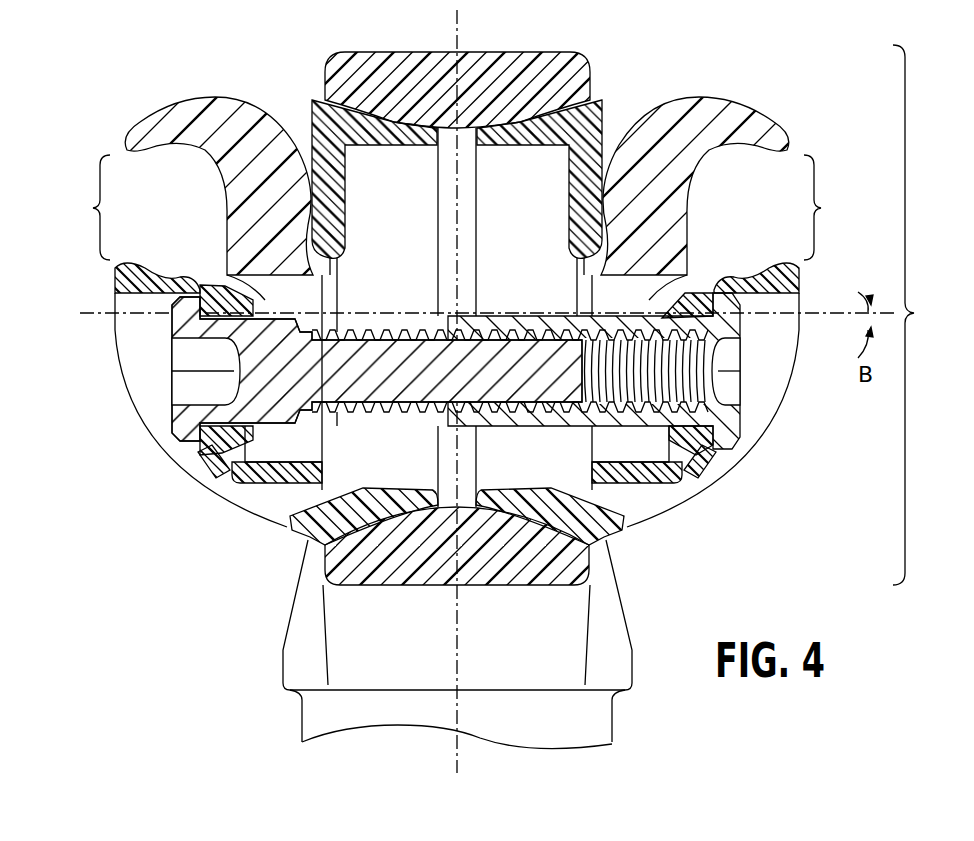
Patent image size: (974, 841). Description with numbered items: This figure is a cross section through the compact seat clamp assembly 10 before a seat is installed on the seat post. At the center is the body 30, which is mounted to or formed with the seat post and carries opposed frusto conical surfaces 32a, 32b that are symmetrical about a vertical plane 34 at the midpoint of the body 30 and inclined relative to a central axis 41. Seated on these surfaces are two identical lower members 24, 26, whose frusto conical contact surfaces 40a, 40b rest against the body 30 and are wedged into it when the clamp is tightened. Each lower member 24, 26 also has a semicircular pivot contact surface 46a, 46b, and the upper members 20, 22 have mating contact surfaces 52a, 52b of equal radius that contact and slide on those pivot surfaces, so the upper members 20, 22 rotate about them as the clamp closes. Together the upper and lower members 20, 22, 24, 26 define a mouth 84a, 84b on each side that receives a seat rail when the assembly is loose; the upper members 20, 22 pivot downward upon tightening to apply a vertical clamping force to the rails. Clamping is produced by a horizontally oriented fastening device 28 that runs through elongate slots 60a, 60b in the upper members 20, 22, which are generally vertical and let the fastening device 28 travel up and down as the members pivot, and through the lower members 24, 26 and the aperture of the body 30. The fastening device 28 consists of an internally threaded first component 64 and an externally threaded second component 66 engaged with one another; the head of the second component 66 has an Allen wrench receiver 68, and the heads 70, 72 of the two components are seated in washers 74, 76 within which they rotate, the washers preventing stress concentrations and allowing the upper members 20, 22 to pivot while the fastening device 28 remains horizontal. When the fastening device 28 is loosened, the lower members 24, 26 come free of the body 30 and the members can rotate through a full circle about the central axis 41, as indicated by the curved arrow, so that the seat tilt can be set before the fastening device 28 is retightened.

The seat clamp assembly 10 is at (919, 315).
The upper member 20 is at (726, 95).
The upper member 22 is at (190, 95).
The lower member 24 is at (747, 258).
The lower member 26 is at (167, 258).
The fastening device 28 is at (760, 368).
The body 30 is at (500, 55).
The frusto conical surface 32a is at (582, 166).
The frusto conical surface 32b is at (332, 221).
The vertical plane 34 is at (458, 752).
The frusto conical contact surface 40a is at (582, 166).
The frusto conical contact surface 40b is at (332, 221).
The central axis 41 is at (835, 313).
The pivot contact surface 46a is at (582, 166).
The pivot contact surface 46b is at (332, 221).
The mating contact surface 52a is at (556, 108).
The mating contact surface 52b is at (365, 108).
The elongate slot 60a is at (680, 290).
The elongate slot 60b is at (245, 290).
The first component 64 is at (620, 415).
The second component 66 is at (272, 380).
The receiver 68 is at (200, 388).
The head 70 is at (722, 440).
The head 72 is at (182, 435).
The washer 74 is at (700, 462).
The washer 76 is at (212, 465).
The mouth 84a is at (835, 207).
The mouth 84b is at (77, 207).